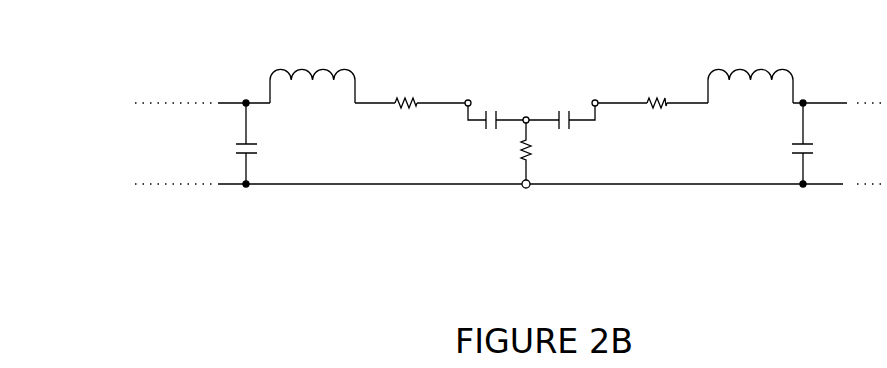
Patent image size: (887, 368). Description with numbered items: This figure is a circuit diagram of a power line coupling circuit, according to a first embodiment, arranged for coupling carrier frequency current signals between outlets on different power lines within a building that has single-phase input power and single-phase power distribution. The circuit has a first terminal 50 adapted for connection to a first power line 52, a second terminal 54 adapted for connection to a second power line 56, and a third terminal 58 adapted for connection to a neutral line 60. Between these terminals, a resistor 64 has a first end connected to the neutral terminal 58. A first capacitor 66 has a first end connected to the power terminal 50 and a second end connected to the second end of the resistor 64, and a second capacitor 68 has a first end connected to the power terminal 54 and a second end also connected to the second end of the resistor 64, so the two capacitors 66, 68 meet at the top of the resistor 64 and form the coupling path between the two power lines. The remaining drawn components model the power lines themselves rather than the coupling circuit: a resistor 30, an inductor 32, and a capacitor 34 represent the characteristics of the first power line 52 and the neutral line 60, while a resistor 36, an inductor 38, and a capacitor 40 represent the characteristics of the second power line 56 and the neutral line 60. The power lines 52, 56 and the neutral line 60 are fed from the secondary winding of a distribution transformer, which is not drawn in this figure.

The resistor 30 is at (402, 97).
The inductor 32 is at (322, 69).
The capacitor 34 is at (268, 152).
The resistor 36 is at (658, 97).
The inductor 38 is at (731, 68).
The capacitor 40 is at (793, 147).
The first terminal 50 is at (464, 97).
The first power line 52 is at (256, 96).
The second terminal 54 is at (596, 98).
The second power line 56 is at (799, 94).
The third terminal 58 is at (533, 204).
The neutral line 60 is at (345, 189).
The resistor 64 is at (539, 150).
The first capacitor 66 is at (490, 106).
The second capacitor 68 is at (557, 105).